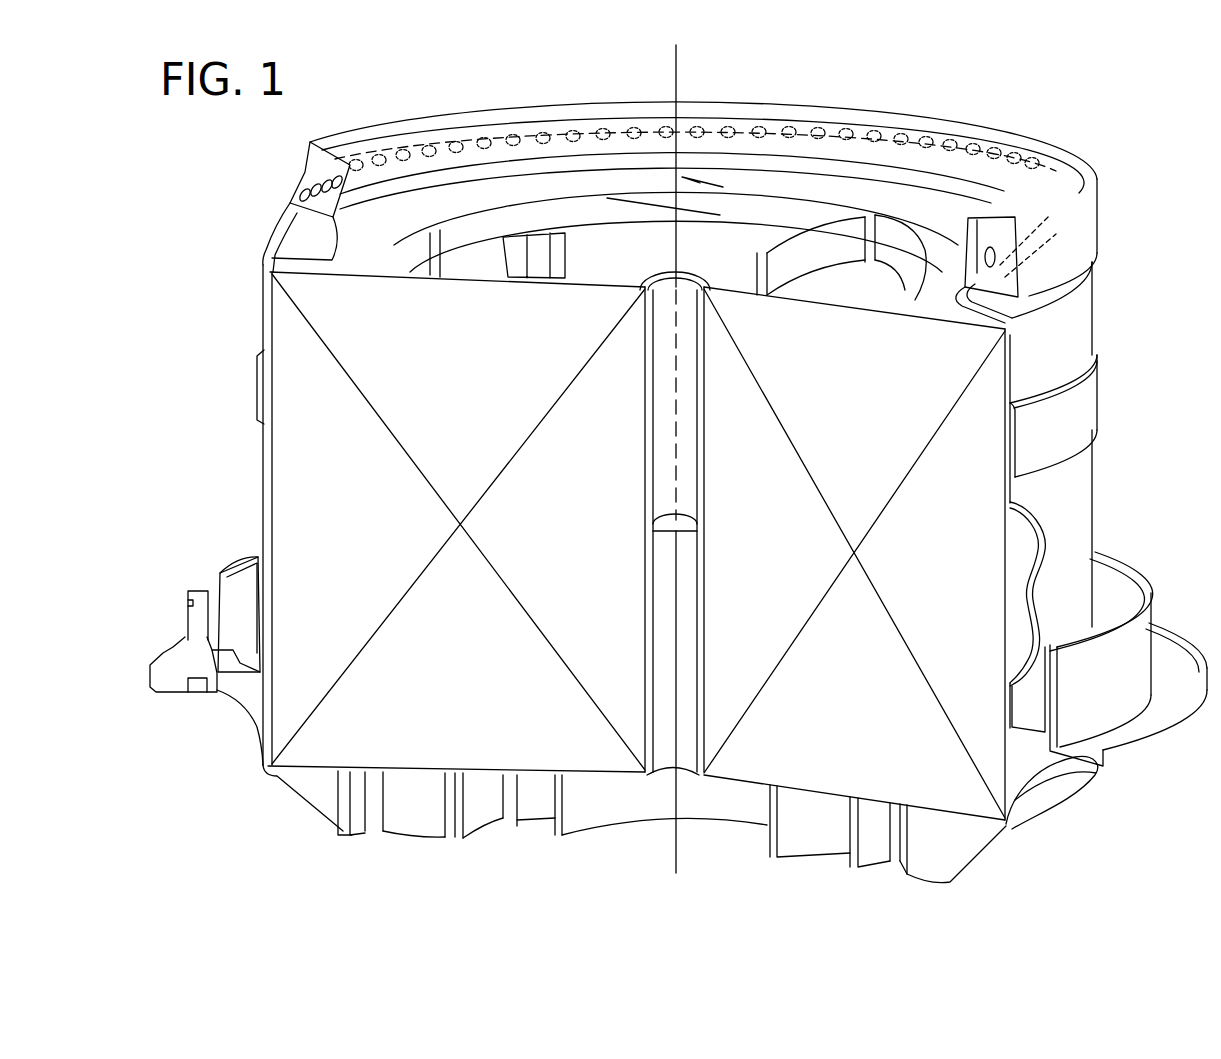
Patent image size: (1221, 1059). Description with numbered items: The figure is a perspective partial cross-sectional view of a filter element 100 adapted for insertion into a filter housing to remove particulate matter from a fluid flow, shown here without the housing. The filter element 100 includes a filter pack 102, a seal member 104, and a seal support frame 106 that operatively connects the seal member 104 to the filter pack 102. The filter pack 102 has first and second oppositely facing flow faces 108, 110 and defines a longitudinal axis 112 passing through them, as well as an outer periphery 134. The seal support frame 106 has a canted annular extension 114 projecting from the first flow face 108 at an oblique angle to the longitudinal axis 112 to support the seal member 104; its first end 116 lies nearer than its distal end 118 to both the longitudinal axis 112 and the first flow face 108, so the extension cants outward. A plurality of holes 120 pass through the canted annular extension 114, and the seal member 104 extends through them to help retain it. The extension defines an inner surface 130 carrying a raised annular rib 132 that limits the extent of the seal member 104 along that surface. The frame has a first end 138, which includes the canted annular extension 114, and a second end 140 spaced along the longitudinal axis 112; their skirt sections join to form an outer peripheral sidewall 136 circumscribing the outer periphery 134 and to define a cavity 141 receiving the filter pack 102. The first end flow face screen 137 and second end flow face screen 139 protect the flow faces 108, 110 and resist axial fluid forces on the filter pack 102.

The filter element 100 is at (1098, 115).
The filter pack 102 is at (983, 549).
The seal member 104 is at (1027, 143).
The seal support frame 106 is at (1098, 288).
The first flow face 108 is at (1050, 350).
The second flow face 110 is at (750, 785).
The longitudinal axis 112 is at (678, 58).
The canted annular extension 114 is at (295, 217).
The first end 116 is at (340, 277).
The distal end 118 is at (298, 192).
The holes 120 is at (548, 140).
The inner surface 130 is at (303, 240).
The raised annular rib 132 is at (895, 170).
The outer periphery 134 is at (1017, 617).
The outer peripheral sidewall 136 is at (1077, 462).
The first end flow face screen 137 is at (820, 213).
The first end 138 is at (1083, 306).
The second end flow face screen 139 is at (578, 815).
The second end 140 is at (1073, 527).
The cavity 141 is at (302, 478).